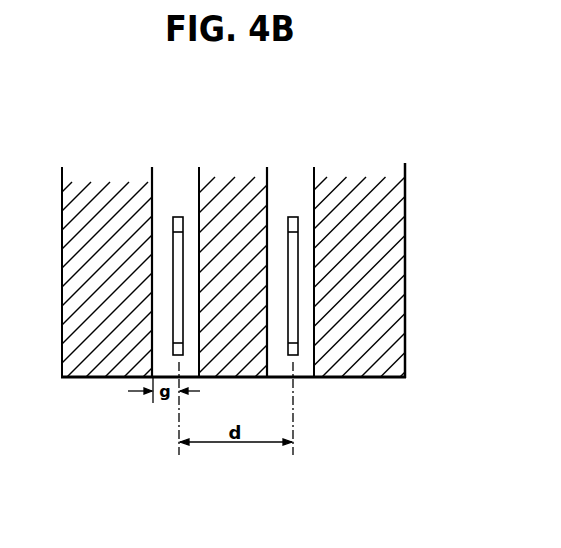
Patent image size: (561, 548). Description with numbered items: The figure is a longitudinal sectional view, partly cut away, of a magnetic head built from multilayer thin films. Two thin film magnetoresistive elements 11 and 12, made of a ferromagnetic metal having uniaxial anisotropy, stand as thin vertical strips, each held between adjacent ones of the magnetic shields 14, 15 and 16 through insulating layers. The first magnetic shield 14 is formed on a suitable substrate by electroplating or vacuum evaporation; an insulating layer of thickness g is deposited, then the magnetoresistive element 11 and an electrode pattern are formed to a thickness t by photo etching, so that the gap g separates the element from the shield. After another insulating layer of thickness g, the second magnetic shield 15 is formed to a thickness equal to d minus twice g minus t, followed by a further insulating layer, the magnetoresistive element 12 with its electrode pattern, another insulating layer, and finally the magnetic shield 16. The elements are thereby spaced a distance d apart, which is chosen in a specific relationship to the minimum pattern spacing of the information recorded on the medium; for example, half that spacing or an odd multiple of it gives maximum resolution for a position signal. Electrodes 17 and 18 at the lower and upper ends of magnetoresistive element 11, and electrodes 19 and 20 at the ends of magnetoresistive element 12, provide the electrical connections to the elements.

The thin film magnetoresistive element 11 is at (185, 258).
The thin film magnetoresistive element 12 is at (298, 253).
The magnetic shield 14 is at (73, 370).
The magnetic shield 15 is at (262, 357).
The magnetic shield 16 is at (370, 363).
The electrode 17 is at (173, 348).
The electrode 18 is at (173, 228).
The electrode 19 is at (296, 347).
The electrode 20 is at (288, 228).